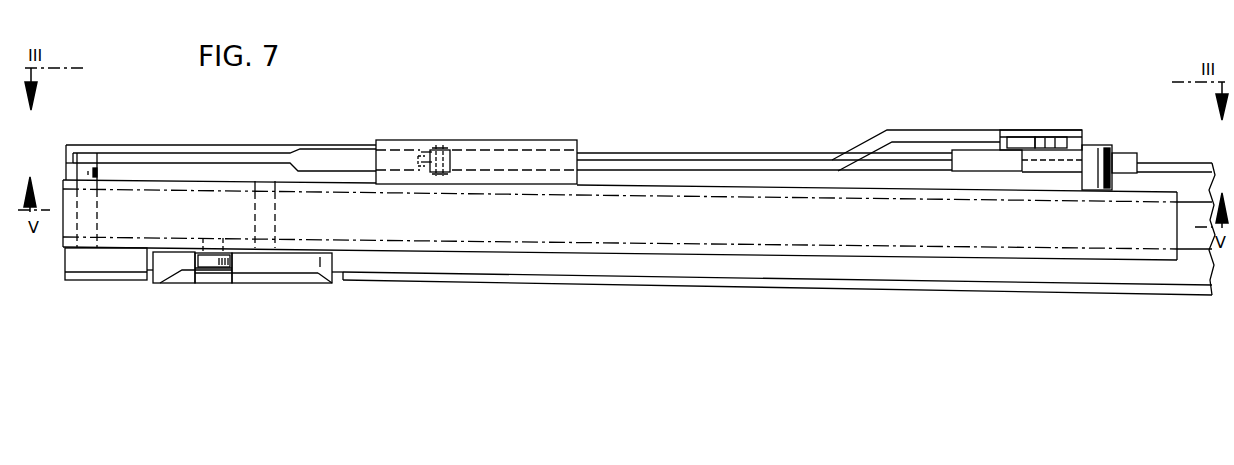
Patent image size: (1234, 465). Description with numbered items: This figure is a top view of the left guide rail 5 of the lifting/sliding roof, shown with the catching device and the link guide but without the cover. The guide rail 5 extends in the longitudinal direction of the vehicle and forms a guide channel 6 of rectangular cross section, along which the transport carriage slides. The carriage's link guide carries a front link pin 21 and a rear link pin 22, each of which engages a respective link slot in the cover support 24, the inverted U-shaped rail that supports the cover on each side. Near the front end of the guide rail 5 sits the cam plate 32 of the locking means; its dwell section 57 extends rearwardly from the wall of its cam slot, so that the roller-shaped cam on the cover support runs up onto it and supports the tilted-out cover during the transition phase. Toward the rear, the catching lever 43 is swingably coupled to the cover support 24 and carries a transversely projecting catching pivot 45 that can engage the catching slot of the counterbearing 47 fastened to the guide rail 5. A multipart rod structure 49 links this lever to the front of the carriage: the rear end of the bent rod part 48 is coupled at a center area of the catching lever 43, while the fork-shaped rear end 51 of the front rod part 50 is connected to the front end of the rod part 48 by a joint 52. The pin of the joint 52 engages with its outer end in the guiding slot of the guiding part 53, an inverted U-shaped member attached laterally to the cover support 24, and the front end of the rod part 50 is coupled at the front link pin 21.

The guide rail 5 is at (640, 268).
The guide channel 6 is at (1186, 212).
The link pin 21 is at (88, 172).
The link pin 22 is at (276, 229).
The cover support 24 is at (905, 233).
The cam plate 32 is at (293, 263).
The catching lever 43 is at (1100, 148).
The catching pivot 45 is at (997, 135).
The counterbearing 47 is at (965, 162).
The rod part 48 is at (694, 166).
The rod structure 49 is at (504, 122).
The rod part 50 is at (275, 160).
The fork-shaped rear end 51 is at (418, 143).
The joint 52 is at (446, 143).
The guiding part 53 is at (543, 148).
The dwell section 57 is at (250, 263).